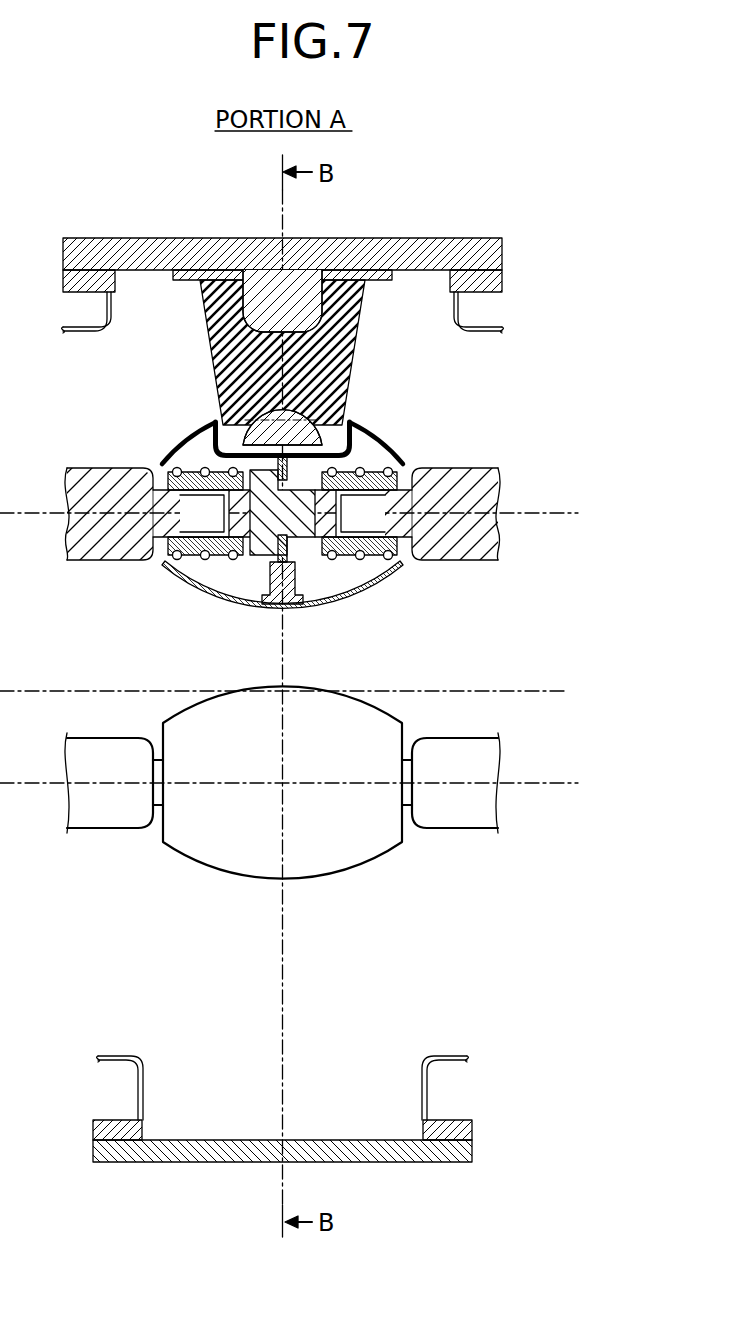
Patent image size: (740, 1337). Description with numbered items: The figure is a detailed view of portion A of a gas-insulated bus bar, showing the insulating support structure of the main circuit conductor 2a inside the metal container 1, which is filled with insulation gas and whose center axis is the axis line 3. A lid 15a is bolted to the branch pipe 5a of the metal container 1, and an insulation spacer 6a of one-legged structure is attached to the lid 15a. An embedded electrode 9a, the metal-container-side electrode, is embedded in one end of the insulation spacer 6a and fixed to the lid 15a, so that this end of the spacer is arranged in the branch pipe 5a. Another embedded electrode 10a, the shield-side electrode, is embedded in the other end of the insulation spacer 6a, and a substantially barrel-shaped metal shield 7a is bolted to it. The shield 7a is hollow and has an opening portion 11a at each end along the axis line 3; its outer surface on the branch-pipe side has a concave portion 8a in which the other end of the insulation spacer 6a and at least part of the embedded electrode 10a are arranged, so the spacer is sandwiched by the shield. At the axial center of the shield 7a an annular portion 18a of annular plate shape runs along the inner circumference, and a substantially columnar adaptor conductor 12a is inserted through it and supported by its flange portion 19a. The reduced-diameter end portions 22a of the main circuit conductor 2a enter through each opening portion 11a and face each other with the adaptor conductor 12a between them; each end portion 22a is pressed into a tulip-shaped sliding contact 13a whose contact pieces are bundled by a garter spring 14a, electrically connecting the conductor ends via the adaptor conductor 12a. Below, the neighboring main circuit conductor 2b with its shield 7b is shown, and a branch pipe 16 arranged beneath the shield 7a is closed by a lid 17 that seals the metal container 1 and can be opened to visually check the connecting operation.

The metal container 1 is at (484, 326).
The main circuit conductor 2a is at (93, 548).
The main circuit conductor 2b is at (88, 815).
The axis line 3 is at (566, 691).
The branch pipe 5a is at (462, 316).
The insulation spacer 6a is at (347, 320).
The shield 7a is at (194, 445).
The shield 7b is at (351, 853).
The concave portion 8a is at (345, 428).
The embedded electrode 9a is at (310, 284).
The embedded electrode 10a is at (294, 408).
The opening portion 11a is at (158, 477).
The adaptor conductor 12a is at (300, 550).
The contact 13a is at (200, 570).
The garter spring 14a is at (166, 476).
The lid 15a is at (83, 252).
The branch pipe 16 is at (428, 1101).
The lid 17 is at (450, 1158).
The annular portion 18a is at (290, 550).
The flange portion 19a is at (264, 556).
The end portion 22a is at (166, 553).